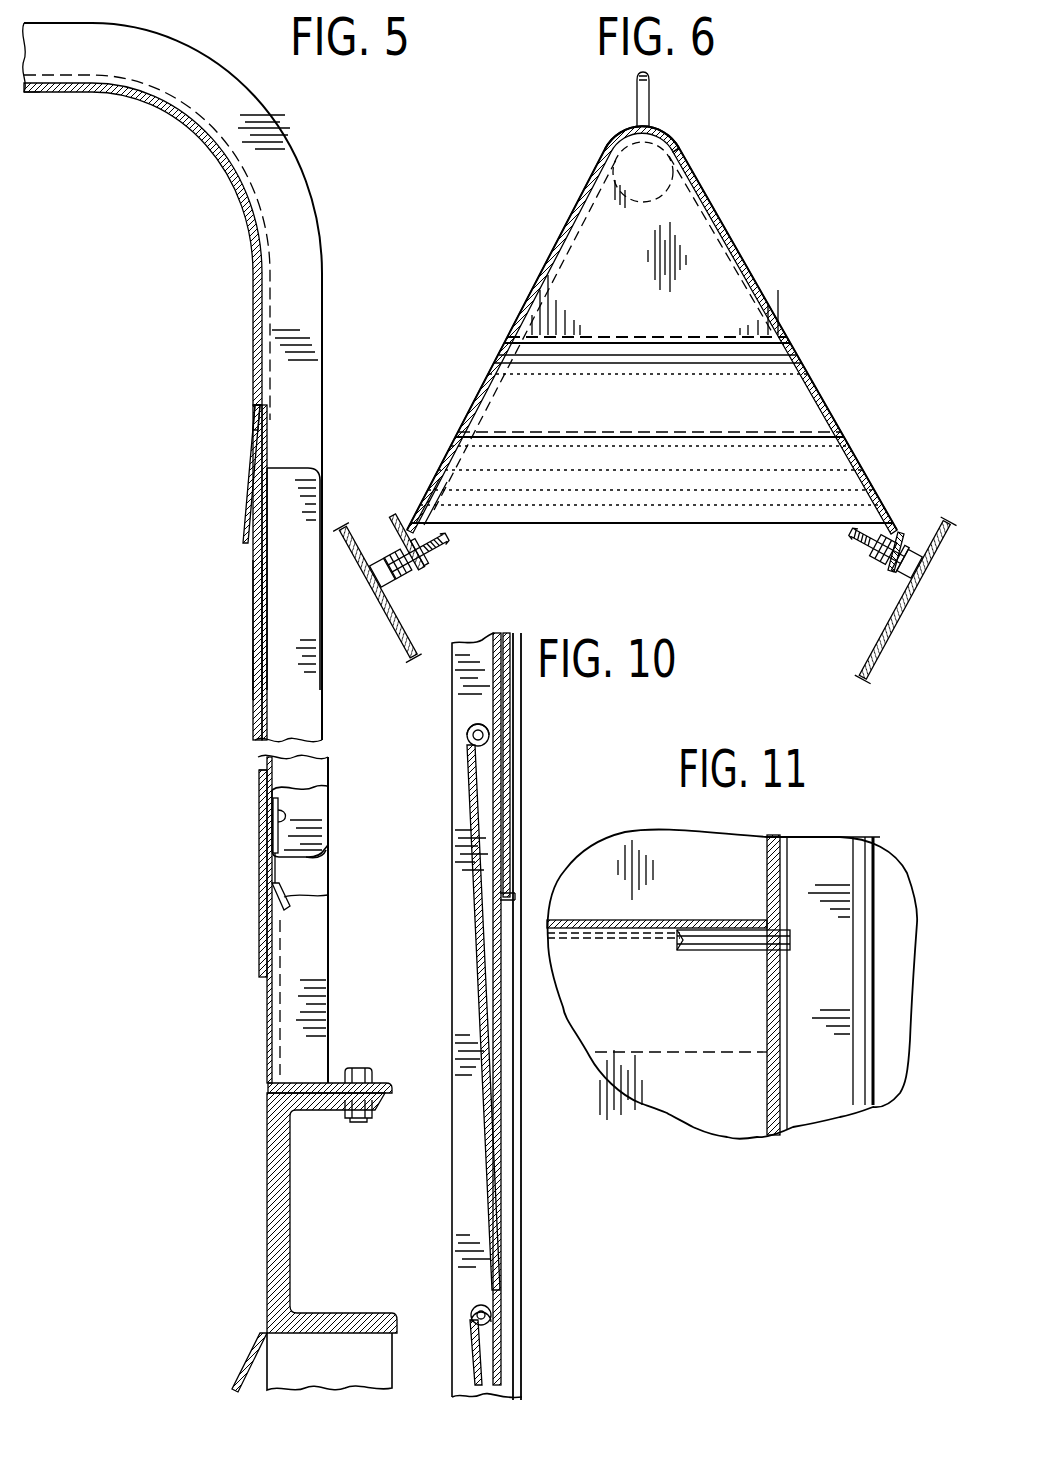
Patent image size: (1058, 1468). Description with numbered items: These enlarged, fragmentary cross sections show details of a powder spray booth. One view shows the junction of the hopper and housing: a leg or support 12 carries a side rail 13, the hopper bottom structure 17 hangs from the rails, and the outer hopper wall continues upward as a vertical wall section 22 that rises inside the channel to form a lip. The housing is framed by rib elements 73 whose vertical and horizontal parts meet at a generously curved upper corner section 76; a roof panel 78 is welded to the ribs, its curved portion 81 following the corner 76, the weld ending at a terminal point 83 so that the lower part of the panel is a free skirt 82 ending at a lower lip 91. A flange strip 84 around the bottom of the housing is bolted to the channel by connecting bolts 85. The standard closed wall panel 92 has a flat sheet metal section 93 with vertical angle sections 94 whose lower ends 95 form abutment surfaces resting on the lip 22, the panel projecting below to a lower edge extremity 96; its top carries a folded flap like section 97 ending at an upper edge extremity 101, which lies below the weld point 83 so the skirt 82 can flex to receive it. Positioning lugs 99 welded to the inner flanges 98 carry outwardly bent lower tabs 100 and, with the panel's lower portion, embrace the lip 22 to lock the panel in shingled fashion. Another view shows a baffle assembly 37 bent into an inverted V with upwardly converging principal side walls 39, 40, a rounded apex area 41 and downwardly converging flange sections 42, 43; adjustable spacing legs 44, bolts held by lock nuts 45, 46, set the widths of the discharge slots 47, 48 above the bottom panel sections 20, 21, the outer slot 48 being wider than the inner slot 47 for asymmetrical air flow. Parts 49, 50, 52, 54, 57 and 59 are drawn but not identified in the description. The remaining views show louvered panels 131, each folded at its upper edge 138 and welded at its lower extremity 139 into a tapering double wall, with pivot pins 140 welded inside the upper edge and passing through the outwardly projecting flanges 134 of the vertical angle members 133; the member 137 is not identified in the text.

In FIG. 5, the legs or supports 12 is at (392, 1350).
In FIG. 5, the side rail 13 is at (288, 1175).
In FIG. 5, the hopper bottom structure 17 is at (240, 1374).
In FIG. 6, the bottom panel section 20 is at (402, 637).
In FIG. 6, the outer hopper wall 21 is at (880, 646).
In FIG. 5, the vertical wall section 22 is at (280, 1010).
In FIG. 6, the baffle assembly 37 is at (652, 311).
In FIG. 6, the principal side wall 39 is at (558, 235).
In FIG. 6, the principal side wall 40 is at (755, 273).
In FIG. 6, the rounded apex area 41 is at (660, 137).
In FIG. 6, the flange section 42 is at (432, 575).
In FIG. 6, the flange section 43 is at (874, 571).
In FIG. 6, the adjustable spacing legs 44 is at (392, 587).
In FIG. 6, the lock nut 45 is at (424, 580).
In FIG. 6, the lock nut 46 is at (437, 561).
In FIG. 6, the inner discharge slot 47 is at (380, 528).
In FIG. 6, the outer discharge slot 48 is at (930, 512).
In FIG. 6, the cross rib 49 is at (788, 401).
In FIG. 6, the bottom plate 50 is at (648, 506).
In FIG. 6, the pin 52 is at (648, 98).
In FIG. 6, the hole 54 is at (633, 203).
In FIG. 6, the lower portion 57 is at (440, 473).
In FIG. 6, the upper portion 59 is at (700, 263).
In FIG. 5, the rib element 73 is at (228, 62).
In FIG. 10, the rib element 73 is at (459, 1205).
In FIG. 5, the curved upper corner section 76 is at (258, 145).
In FIG. 5, the roof panel 78 is at (62, 93).
In FIG. 5, the curved portion of roof panel 81 is at (218, 170).
In FIG. 5, the free skirt 82 is at (250, 470).
In FIG. 5, the terminal point of weld 83 is at (265, 320).
In FIG. 5, the flange strip 84 is at (382, 1083).
In FIG. 5, the connecting bolts 85 is at (360, 1066).
In FIG. 5, the lower lip of roof panel 91 is at (245, 548).
In FIG. 5, the closed wall panel 92 is at (250, 676).
In FIG. 5, the flat sheet metal section 93 is at (258, 612).
In FIG. 5, the angle sections 94 is at (318, 692).
In FIG. 5, the lower end of angle section 95 is at (320, 858).
In FIG. 5, the lower edge extremity of panel 96 is at (263, 978).
In FIG. 5, the flap like section 97 is at (268, 450).
In FIG. 5, the inner flanges of angle members 98 is at (314, 788).
In FIG. 5, the positioning lugs 99 is at (278, 818).
In FIG. 5, the outwardly bent lower tabs 100 is at (328, 898).
In FIG. 5, the upper edge extremity of panel 101 is at (262, 405).
In FIG. 10, the hinged louvered panel 131 is at (517, 769).
In FIG. 11, the hinged louvered panel 131 is at (710, 1139).
In FIG. 11, the angle members 133 is at (812, 849).
In FIG. 11, the outwardly projecting flanges 134 is at (780, 1001).
In FIG. 10, the arm 137 is at (478, 954).
In FIG. 10, the upper edge of louver 138 is at (466, 727).
In FIG. 11, the upper edge of louver 138 is at (620, 923).
In FIG. 10, the lower extremity of louver 139 is at (520, 898).
In FIG. 10, the pivot pins 140 is at (467, 737).
In FIG. 11, the pivot pins 140 is at (724, 941).